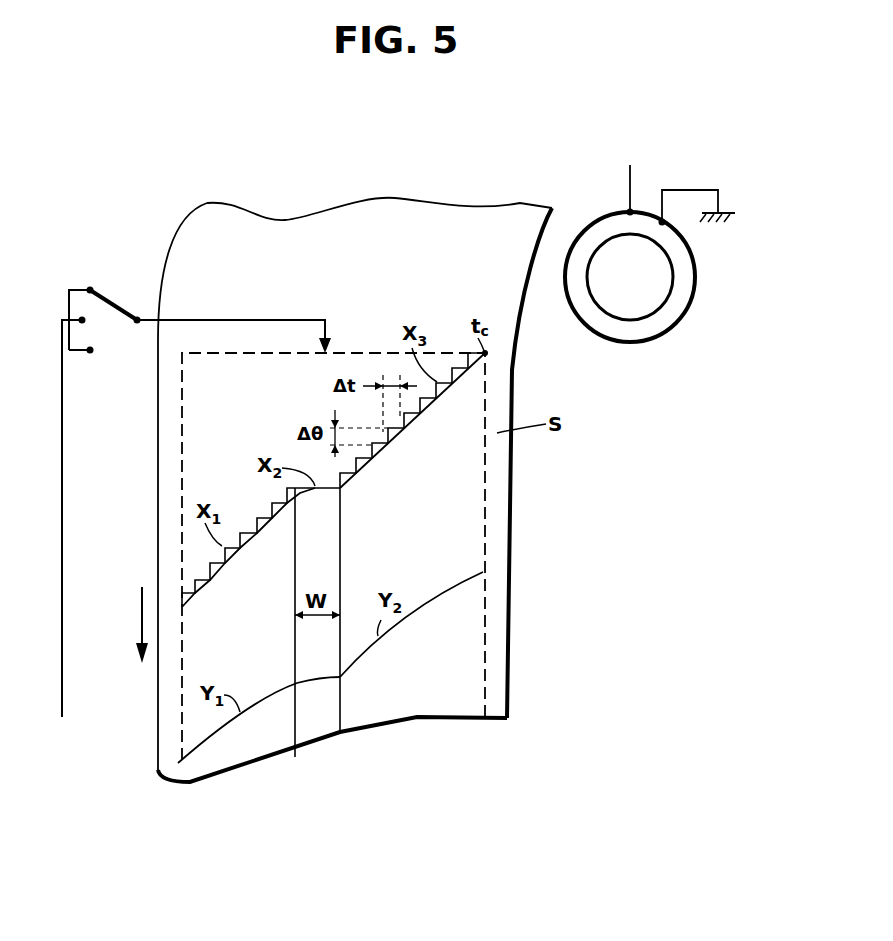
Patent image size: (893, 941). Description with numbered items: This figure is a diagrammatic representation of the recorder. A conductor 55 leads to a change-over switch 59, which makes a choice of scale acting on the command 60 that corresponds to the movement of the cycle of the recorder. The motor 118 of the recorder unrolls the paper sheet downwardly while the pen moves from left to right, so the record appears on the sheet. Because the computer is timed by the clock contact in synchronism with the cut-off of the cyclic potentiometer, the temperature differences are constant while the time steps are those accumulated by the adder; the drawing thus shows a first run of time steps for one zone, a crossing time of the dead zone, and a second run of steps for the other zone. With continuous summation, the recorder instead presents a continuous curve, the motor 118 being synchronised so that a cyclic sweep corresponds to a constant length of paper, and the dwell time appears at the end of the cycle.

The conductor 55 is at (62, 471).
The change-over switch 59 is at (112, 302).
The command 60 is at (303, 320).
The motor 118 is at (638, 290).